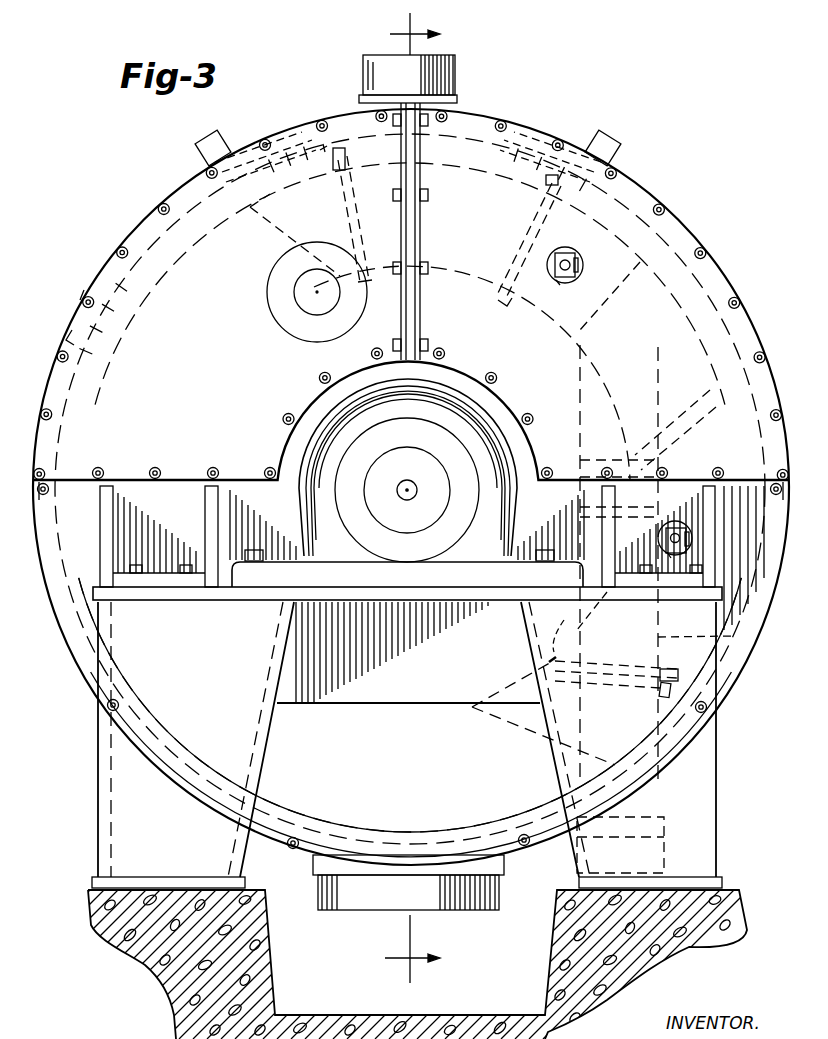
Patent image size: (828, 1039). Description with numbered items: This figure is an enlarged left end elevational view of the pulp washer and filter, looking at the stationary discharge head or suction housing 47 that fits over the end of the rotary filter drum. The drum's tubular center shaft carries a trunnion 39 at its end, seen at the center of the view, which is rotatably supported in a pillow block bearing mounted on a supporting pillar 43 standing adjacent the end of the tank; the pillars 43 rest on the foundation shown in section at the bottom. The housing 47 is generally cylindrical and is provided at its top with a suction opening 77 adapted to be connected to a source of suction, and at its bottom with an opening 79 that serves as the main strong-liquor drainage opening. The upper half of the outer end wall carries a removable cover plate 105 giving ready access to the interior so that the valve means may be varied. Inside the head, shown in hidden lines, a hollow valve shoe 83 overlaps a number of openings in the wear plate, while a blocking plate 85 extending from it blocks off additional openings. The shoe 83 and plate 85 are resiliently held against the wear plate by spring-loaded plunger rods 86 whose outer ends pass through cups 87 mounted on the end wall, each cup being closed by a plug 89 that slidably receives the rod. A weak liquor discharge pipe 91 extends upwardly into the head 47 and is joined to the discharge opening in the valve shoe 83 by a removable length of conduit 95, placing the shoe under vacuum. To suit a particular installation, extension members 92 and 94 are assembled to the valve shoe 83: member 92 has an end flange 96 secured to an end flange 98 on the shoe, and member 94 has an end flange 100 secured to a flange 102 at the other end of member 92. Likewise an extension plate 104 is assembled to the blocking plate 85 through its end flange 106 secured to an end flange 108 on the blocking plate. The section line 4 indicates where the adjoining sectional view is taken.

The section line 4- 4 is at (412, 498).
The trunnion 39 is at (383, 500).
The supporting pillar 43 is at (122, 755).
The discharge head or suction housing 47 is at (636, 198).
The suction opening 77 is at (376, 56).
The bottom opening 79 is at (330, 807).
The valve shoe 83 is at (700, 274).
The blocking plate 85 is at (735, 625).
The plunger rod 86 is at (574, 258).
The cup 87 is at (558, 282).
The plug 89 is at (579, 268).
The weak liquor discharge pipe 91 is at (332, 482).
The extension member 92 is at (460, 280).
The extension member 94 is at (262, 228).
The removable length of conduit 95 is at (735, 645).
The end flange 96 is at (481, 300).
The end flange 98 is at (506, 311).
The end flange 100 is at (308, 173).
The flange 102 is at (347, 158).
The extension plate 104 is at (524, 681).
The removable cover plate 105 is at (100, 397).
The end flange 106 is at (548, 662).
The end flange 108 is at (568, 633).